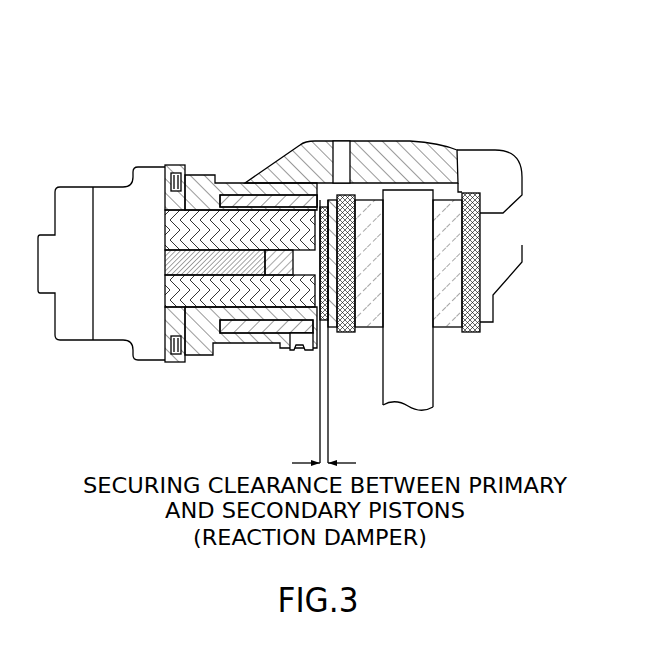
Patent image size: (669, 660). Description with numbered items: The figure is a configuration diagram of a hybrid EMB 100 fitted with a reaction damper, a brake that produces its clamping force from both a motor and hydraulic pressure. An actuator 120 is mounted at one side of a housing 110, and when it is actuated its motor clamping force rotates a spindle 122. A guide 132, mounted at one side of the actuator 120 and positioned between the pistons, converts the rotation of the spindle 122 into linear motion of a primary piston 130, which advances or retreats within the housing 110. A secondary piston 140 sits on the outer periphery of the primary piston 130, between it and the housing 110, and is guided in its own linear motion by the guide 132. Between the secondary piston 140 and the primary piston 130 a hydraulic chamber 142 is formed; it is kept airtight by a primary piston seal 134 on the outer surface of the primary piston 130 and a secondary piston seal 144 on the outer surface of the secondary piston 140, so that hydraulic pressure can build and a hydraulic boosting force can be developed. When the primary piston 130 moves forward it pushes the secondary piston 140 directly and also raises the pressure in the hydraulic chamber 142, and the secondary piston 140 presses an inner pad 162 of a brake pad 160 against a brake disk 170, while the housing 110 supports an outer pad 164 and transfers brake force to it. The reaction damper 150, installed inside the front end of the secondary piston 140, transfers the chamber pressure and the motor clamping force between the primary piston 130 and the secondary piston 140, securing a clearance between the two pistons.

The hybrid EMB 100 is at (247, 126).
The housing 110 is at (250, 176).
The actuator 120 is at (112, 314).
The spindle 122 is at (188, 265).
The primary piston 130 is at (173, 236).
The guide 132 is at (177, 176).
The primary piston seal 134 is at (282, 314).
The secondary piston 140 is at (294, 168).
The hydraulic chamber 142 is at (323, 206).
The secondary piston seal 144 is at (295, 334).
The reaction damper 150 is at (349, 214).
The brake pad 160 is at (449, 317).
The inner pad 162 is at (371, 312).
The outer pad 164 is at (448, 318).
The brake disk 170 is at (422, 387).